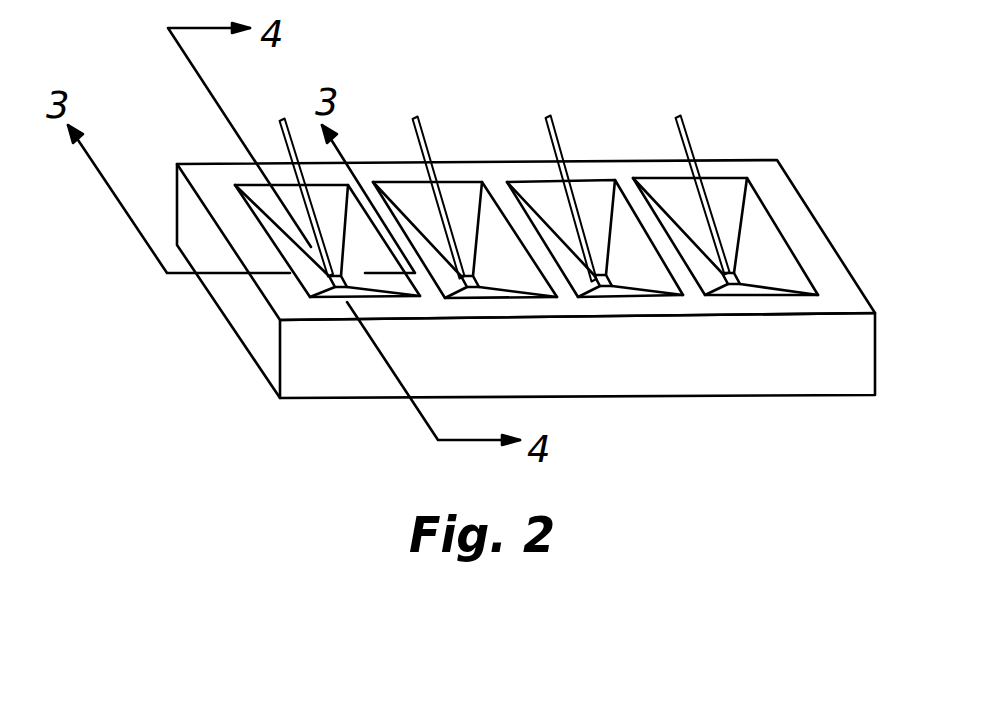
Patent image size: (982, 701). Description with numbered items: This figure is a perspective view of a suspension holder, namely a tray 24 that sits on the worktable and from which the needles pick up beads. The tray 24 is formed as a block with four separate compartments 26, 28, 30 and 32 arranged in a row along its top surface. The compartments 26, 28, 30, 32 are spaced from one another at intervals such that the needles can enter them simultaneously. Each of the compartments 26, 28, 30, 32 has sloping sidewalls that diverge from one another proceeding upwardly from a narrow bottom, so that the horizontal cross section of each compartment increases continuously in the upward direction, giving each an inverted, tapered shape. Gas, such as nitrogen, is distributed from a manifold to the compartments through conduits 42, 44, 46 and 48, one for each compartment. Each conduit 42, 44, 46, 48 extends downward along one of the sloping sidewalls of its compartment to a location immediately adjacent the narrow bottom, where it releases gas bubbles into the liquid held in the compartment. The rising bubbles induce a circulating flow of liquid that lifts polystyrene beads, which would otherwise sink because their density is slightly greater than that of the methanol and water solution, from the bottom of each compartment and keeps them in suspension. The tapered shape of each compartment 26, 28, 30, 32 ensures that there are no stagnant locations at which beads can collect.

The tray 24 is at (655, 383).
The compartment 26 is at (252, 188).
The compartment 28 is at (457, 193).
The compartment 30 is at (590, 190).
The compartment 32 is at (720, 188).
The conduit 42 is at (286, 118).
The conduit 44 is at (420, 119).
The conduit 46 is at (550, 119).
The conduit 48 is at (680, 119).